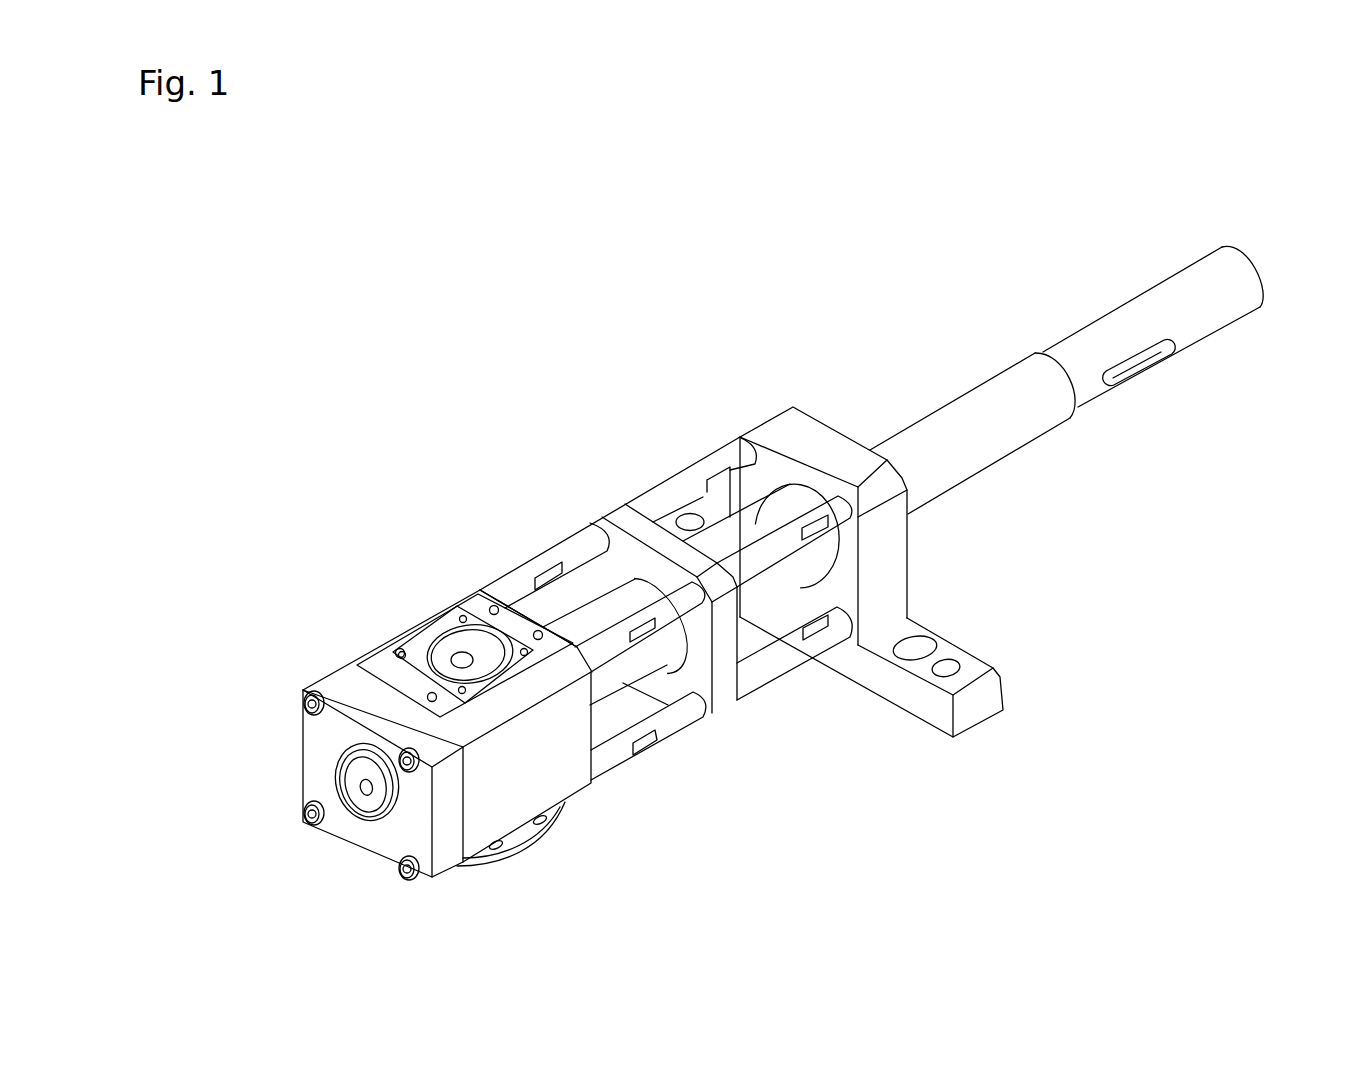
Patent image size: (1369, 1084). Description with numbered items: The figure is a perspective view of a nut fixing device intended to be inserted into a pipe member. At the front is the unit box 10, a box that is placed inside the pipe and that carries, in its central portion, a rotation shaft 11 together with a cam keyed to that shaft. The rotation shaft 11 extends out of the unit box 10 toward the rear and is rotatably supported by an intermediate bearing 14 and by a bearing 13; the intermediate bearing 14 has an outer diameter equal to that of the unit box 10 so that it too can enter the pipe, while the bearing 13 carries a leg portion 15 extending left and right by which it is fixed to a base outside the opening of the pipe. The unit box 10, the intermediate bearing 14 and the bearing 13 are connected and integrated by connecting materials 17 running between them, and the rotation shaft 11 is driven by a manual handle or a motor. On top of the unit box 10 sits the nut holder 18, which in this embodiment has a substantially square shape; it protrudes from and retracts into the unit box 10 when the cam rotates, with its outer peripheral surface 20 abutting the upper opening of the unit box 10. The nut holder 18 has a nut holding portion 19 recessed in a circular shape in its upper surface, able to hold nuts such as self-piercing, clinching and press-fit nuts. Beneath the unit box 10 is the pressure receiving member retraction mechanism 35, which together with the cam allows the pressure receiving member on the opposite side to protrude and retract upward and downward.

The unit box 10 is at (373, 660).
The rotation shaft 11 is at (958, 420).
The bearing 13 is at (780, 423).
The intermediate bearing 14 is at (622, 515).
The leg portion 15 is at (973, 667).
The connecting materials 17 is at (568, 553).
The nut holder 18 is at (450, 620).
The nut holding portion 19 is at (465, 640).
The outer peripheral surface 20 is at (408, 675).
The pressure receiving member retraction mechanism 35 is at (532, 832).